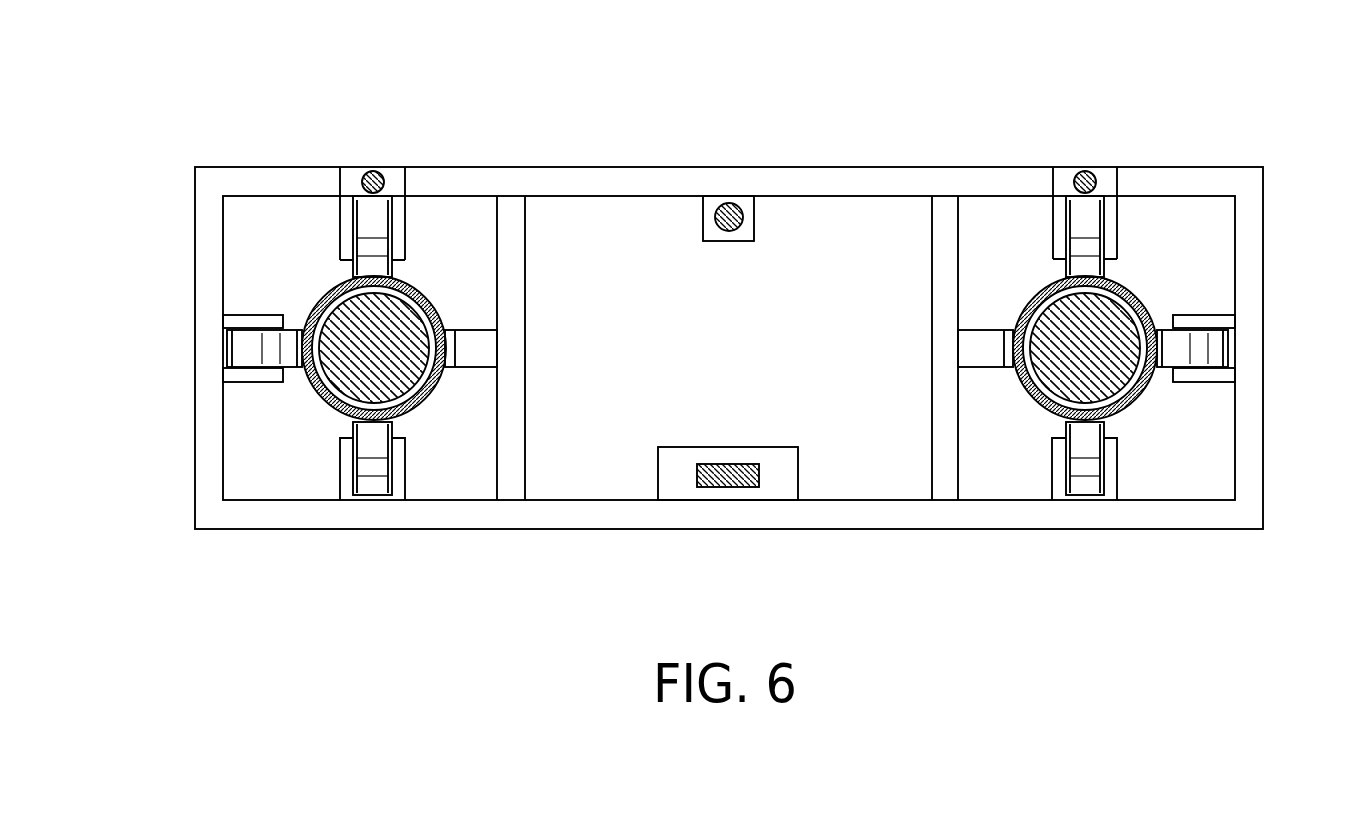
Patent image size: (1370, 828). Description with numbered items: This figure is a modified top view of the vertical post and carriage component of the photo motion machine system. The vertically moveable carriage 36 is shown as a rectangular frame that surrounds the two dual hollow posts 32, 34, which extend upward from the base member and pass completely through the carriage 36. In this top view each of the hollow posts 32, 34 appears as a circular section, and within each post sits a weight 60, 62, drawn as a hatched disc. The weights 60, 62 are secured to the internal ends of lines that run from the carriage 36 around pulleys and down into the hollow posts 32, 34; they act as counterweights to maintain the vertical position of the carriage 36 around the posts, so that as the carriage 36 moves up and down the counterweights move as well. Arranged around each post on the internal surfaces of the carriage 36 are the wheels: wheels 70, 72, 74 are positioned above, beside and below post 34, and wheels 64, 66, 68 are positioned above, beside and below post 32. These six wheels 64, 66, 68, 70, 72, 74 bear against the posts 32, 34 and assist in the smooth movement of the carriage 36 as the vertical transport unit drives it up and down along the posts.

The vertically moveable carriage 36 is at (832, 185).
The hollow post 32 is at (1138, 400).
The hollow post 34 is at (323, 404).
The weight 60 is at (1102, 325).
The weight 62 is at (340, 313).
The wheel 64 is at (1089, 215).
The wheel 66 is at (1213, 349).
The wheel 68 is at (1088, 482).
The wheel 70 is at (368, 224).
The wheel 72 is at (248, 349).
The wheel 74 is at (372, 480).